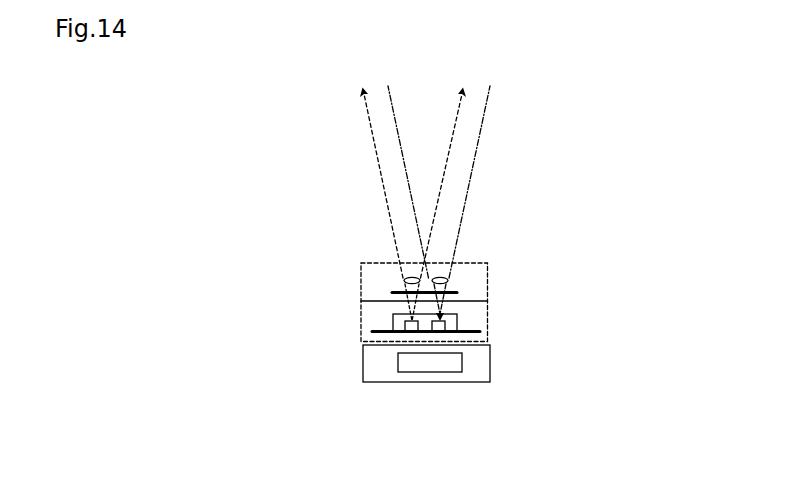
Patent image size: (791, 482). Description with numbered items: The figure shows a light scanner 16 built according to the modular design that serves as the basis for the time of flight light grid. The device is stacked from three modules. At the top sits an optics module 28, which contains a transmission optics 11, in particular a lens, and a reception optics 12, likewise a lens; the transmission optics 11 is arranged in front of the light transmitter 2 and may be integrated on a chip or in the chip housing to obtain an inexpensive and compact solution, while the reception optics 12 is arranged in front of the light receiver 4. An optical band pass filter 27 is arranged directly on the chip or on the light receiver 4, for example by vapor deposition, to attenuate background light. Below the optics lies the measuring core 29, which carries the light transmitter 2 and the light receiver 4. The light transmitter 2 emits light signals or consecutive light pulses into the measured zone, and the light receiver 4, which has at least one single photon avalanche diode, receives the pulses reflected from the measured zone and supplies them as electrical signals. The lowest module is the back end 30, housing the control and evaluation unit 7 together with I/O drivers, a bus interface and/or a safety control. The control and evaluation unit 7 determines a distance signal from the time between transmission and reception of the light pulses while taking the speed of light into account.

The sensor arrangement 16 is at (557, 148).
The transmission optics 11 is at (405, 278).
The reception optics 12 is at (447, 275).
The optical band pass filter 27 is at (395, 292).
The optics module 28 is at (488, 278).
The measuring core 29 is at (488, 328).
The light transmitter 2 is at (408, 322).
The light receiver 4 is at (438, 328).
The control and evaluation unit 7 is at (432, 360).
The back end 30 is at (457, 382).